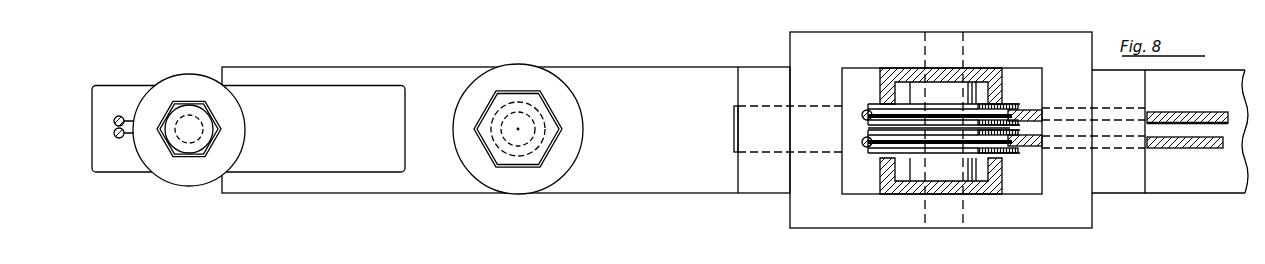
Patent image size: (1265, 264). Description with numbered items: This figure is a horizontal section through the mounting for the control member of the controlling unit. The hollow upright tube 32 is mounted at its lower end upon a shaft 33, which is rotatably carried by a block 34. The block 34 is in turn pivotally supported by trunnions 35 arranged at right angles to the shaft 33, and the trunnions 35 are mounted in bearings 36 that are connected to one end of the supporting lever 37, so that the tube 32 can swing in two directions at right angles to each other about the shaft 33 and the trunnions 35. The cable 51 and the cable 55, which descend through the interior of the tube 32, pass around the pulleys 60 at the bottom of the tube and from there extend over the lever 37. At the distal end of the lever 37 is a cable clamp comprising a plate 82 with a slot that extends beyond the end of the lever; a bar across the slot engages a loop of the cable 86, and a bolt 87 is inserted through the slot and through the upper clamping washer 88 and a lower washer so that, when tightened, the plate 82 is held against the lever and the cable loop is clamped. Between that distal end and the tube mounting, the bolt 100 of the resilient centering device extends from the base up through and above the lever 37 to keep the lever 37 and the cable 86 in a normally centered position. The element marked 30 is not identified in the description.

The block 30 is at (837, 230).
The hollow upright tube 32 is at (993, 194).
The shaft 33 is at (956, 233).
The block 34 is at (934, 145).
The trunnions 35 is at (734, 119).
The bearings 36 is at (763, 193).
The supporting lever 37 is at (421, 186).
The cable 51 is at (1192, 112).
The cable 55 is at (1192, 150).
The pulleys 60 is at (873, 153).
The plate 82 is at (108, 152).
The cable 86 is at (122, 118).
The bolt 87 is at (203, 140).
The upper clamping washer 88 is at (242, 113).
The bolt 100 is at (535, 140).